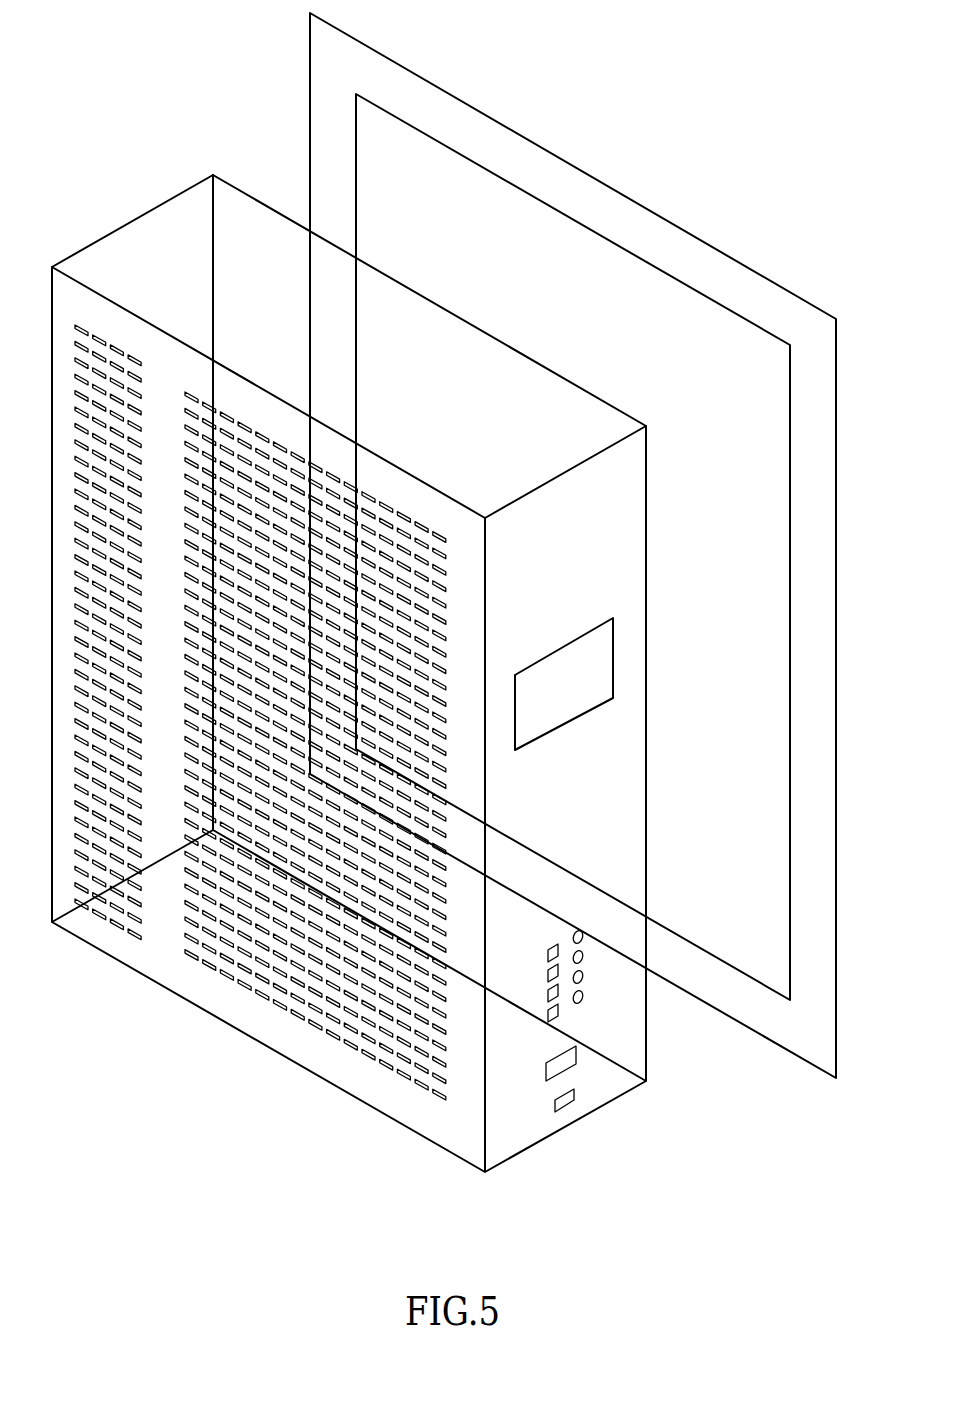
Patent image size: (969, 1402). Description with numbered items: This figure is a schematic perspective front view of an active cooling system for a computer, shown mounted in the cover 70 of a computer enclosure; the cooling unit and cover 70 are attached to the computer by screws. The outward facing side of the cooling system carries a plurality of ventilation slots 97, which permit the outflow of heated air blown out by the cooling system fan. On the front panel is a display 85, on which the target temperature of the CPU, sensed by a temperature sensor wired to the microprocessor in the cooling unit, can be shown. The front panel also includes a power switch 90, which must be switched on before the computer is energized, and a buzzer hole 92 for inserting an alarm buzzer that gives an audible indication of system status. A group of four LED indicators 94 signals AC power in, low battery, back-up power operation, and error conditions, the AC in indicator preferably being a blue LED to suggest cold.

The cover 70 is at (157, 232).
The ventilation slots 97 is at (240, 978).
The display 85 is at (600, 675).
The LED indicators 94 is at (600, 980).
The power switch 90 is at (570, 1060).
The buzzer hole 92 is at (566, 1102).